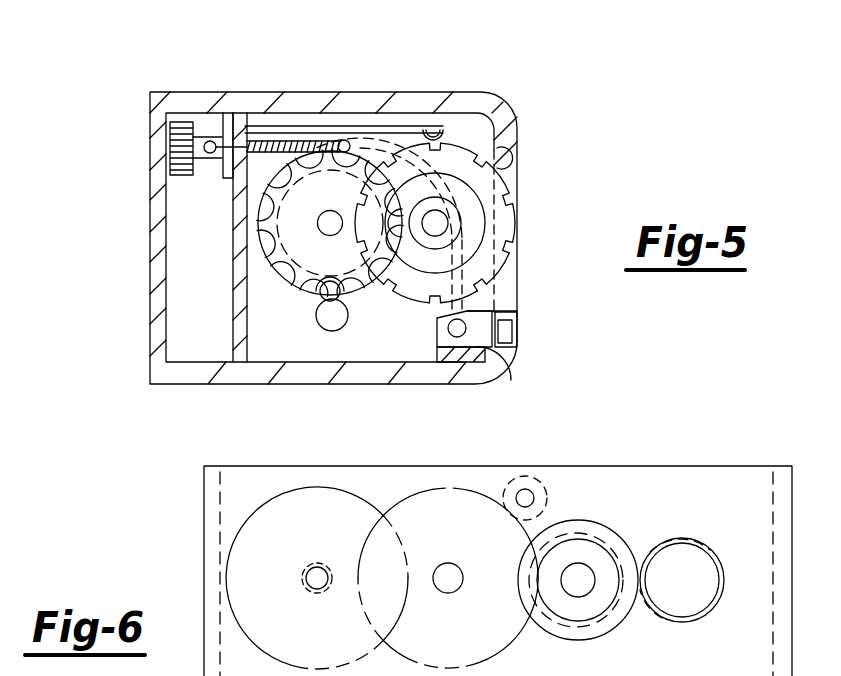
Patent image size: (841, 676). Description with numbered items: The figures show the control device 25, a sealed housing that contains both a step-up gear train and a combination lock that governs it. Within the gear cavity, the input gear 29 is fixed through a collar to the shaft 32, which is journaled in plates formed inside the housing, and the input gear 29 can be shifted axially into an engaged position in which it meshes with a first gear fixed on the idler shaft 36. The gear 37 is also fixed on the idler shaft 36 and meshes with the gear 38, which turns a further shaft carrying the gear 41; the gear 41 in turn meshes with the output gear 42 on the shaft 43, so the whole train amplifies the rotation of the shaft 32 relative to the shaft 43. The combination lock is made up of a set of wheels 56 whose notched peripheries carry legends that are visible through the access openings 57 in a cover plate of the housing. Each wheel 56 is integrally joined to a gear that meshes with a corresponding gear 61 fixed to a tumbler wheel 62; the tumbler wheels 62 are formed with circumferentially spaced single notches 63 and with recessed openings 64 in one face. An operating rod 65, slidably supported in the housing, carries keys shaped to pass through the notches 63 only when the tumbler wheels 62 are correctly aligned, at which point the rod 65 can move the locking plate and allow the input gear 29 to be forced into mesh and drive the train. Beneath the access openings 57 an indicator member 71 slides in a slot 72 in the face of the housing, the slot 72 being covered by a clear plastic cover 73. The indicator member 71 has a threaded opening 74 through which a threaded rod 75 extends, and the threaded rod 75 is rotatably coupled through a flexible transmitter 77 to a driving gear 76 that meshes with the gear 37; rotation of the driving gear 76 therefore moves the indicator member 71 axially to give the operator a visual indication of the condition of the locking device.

In FIG. 5, the control device 25 is at (522, 85).
In FIG. 5, the flexible transmitter 77 is at (372, 126).
In FIG. 5, the access openings 57 is at (505, 158).
In FIG. 5, the wheels 56 is at (520, 222).
In FIG. 5, the tumbler wheels 62 is at (240, 222).
In FIG. 5, the recessed openings 64 is at (240, 276).
In FIG. 5, the gears 61 is at (366, 296).
In FIG. 5, the notches 63 is at (320, 300).
In FIG. 5, the operating rod 65 is at (333, 320).
In FIG. 5, the threaded opening 74 is at (457, 332).
In FIG. 5, the slot 72 is at (518, 358).
In FIG. 5, the threaded rod 75 is at (462, 372).
In FIG. 5, the indicator member 71 is at (494, 310).
In FIG. 5, the clear plastic cover 73 is at (517, 332).
In FIG. 6, the input gear 29 is at (350, 490).
In FIG. 6, the shaft 32 is at (308, 574).
In FIG. 6, the gear 37 is at (440, 490).
In FIG. 6, the idler shaft 36 is at (446, 563).
In FIG. 6, the driving gear 76 is at (535, 470).
In FIG. 6, the gear 38 is at (590, 522).
In FIG. 6, the gear 41 is at (595, 578).
In FIG. 6, the output gear 42 is at (682, 538).
In FIG. 6, the shaft 43 is at (718, 565).